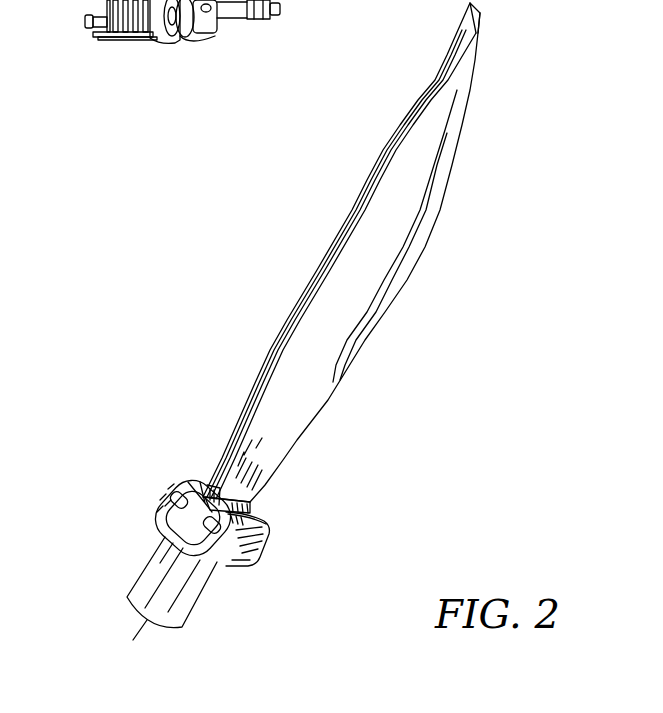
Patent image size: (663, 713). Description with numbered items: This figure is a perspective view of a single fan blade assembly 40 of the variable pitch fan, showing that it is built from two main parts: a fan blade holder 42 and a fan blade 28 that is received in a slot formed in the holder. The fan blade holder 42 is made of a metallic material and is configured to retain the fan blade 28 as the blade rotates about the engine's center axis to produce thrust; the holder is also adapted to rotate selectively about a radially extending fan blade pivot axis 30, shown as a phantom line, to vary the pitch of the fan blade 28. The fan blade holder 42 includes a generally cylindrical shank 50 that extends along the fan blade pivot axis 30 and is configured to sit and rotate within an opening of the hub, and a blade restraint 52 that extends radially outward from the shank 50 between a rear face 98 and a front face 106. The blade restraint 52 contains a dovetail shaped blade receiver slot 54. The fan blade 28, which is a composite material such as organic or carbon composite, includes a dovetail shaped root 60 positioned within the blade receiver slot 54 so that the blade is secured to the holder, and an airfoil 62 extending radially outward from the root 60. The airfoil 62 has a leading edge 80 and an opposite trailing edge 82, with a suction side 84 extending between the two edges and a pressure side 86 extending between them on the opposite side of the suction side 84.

The fan blade assembly 40 is at (381, 251).
The suction side 84 is at (411, 97).
The leading edge 80 is at (365, 190).
The pressure side 86 is at (456, 117).
The trailing edge 82 is at (452, 176).
The fan blade 28 is at (429, 252).
The airfoil 62 is at (337, 383).
The root 60 is at (251, 503).
The blade receiver slot 54 is at (194, 481).
The rear face 98 is at (283, 528).
The front face 106 is at (151, 520).
The blade restraint 52 is at (271, 542).
The fan blade holder 42 is at (207, 527).
The shank 50 is at (197, 600).
The fan blade pivot axis 30 is at (140, 627).